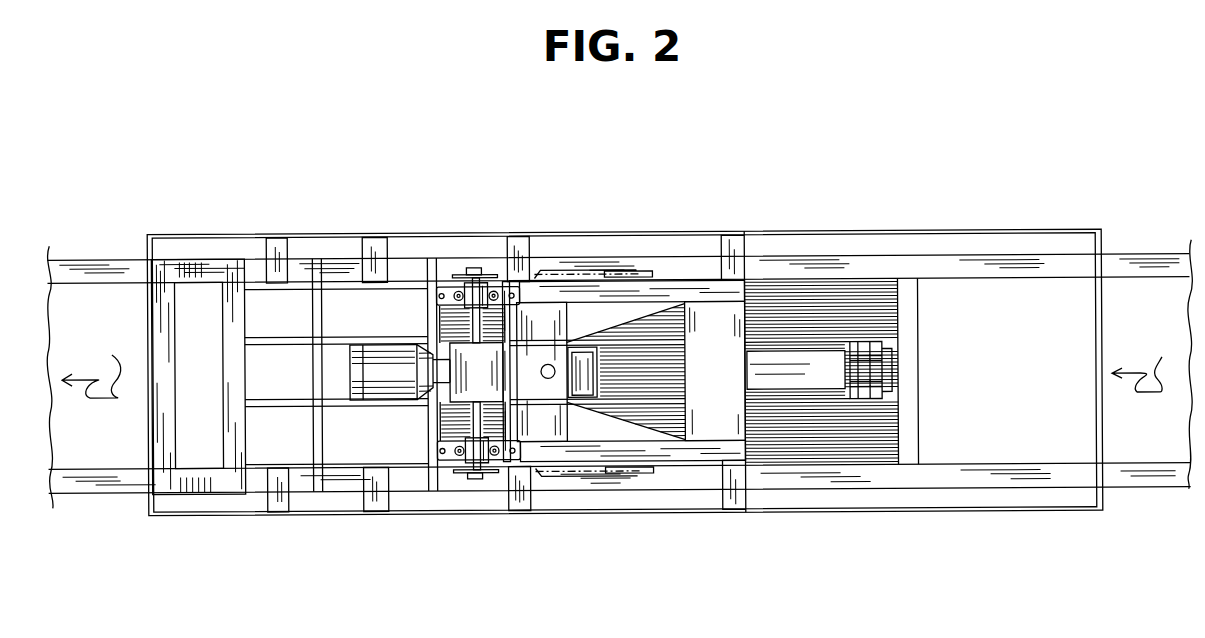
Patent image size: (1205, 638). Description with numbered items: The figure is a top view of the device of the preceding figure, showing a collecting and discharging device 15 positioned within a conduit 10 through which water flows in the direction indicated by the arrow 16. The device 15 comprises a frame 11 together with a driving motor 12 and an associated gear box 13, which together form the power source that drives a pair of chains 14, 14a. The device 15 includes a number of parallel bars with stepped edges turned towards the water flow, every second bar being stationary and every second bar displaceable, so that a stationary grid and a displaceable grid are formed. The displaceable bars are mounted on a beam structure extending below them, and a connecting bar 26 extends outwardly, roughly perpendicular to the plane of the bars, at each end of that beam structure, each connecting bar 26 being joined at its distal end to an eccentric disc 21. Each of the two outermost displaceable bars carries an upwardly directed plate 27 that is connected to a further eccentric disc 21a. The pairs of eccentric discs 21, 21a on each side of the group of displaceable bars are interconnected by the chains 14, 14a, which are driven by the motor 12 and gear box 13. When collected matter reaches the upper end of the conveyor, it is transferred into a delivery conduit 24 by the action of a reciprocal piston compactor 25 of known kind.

The conduit 10 is at (75, 301).
The frame 11 is at (208, 243).
The driving motor 12 is at (377, 361).
The gear box 13 is at (482, 372).
The chain 14 is at (520, 470).
The chain 14a is at (501, 276).
The collecting and discharging device 15 is at (650, 329).
The arrow 16 is at (616, 359).
The eccentric disc 21 is at (648, 274).
The eccentric disc 21a is at (493, 284).
The delivery conduit 24 is at (192, 415).
The reciprocal piston compactor 25 is at (585, 312).
The connecting bar 26 is at (573, 266).
The plate 27 is at (457, 273).